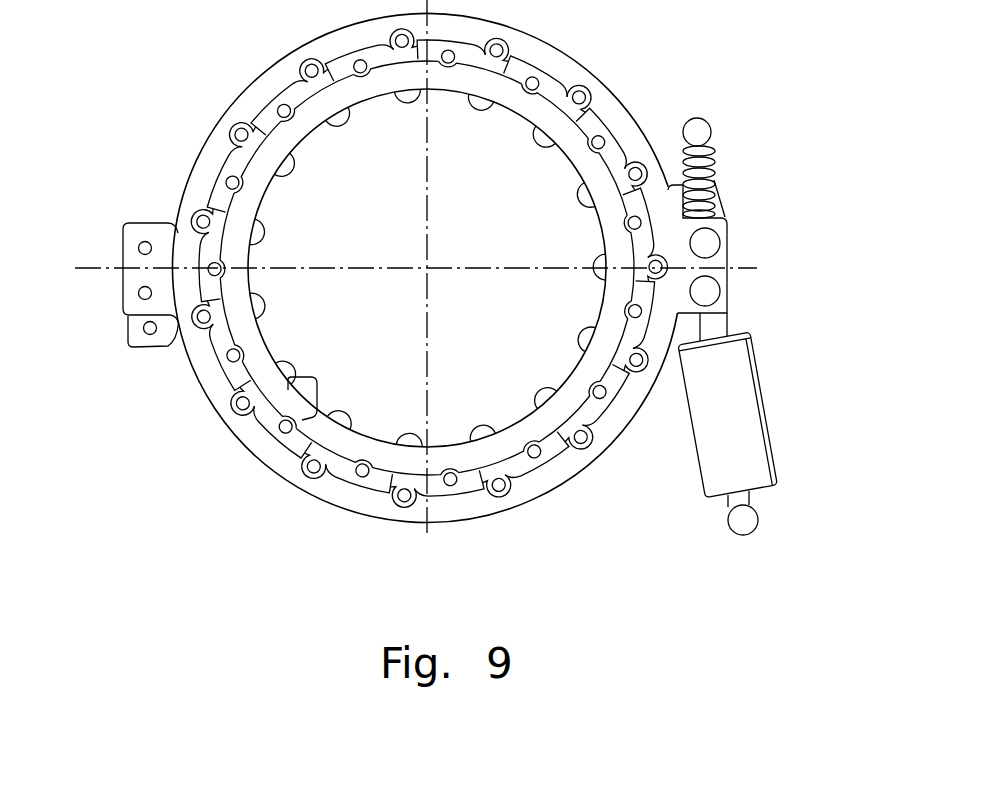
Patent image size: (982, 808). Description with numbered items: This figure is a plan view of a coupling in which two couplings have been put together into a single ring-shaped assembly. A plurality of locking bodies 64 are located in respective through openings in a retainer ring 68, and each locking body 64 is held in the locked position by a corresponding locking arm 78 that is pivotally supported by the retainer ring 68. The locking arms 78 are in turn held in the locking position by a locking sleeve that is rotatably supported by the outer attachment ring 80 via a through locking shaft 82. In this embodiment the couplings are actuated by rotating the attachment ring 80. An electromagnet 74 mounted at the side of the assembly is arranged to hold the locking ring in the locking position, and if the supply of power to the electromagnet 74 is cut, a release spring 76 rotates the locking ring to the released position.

The locking body 64 is at (391, 274).
The retainer ring 68 is at (391, 266).
The electromagnet 74 is at (743, 397).
The release spring 76 is at (722, 171).
The locking arm 78 is at (238, 383).
The attachment ring 80 is at (327, 488).
The locking shaft 82 is at (201, 319).